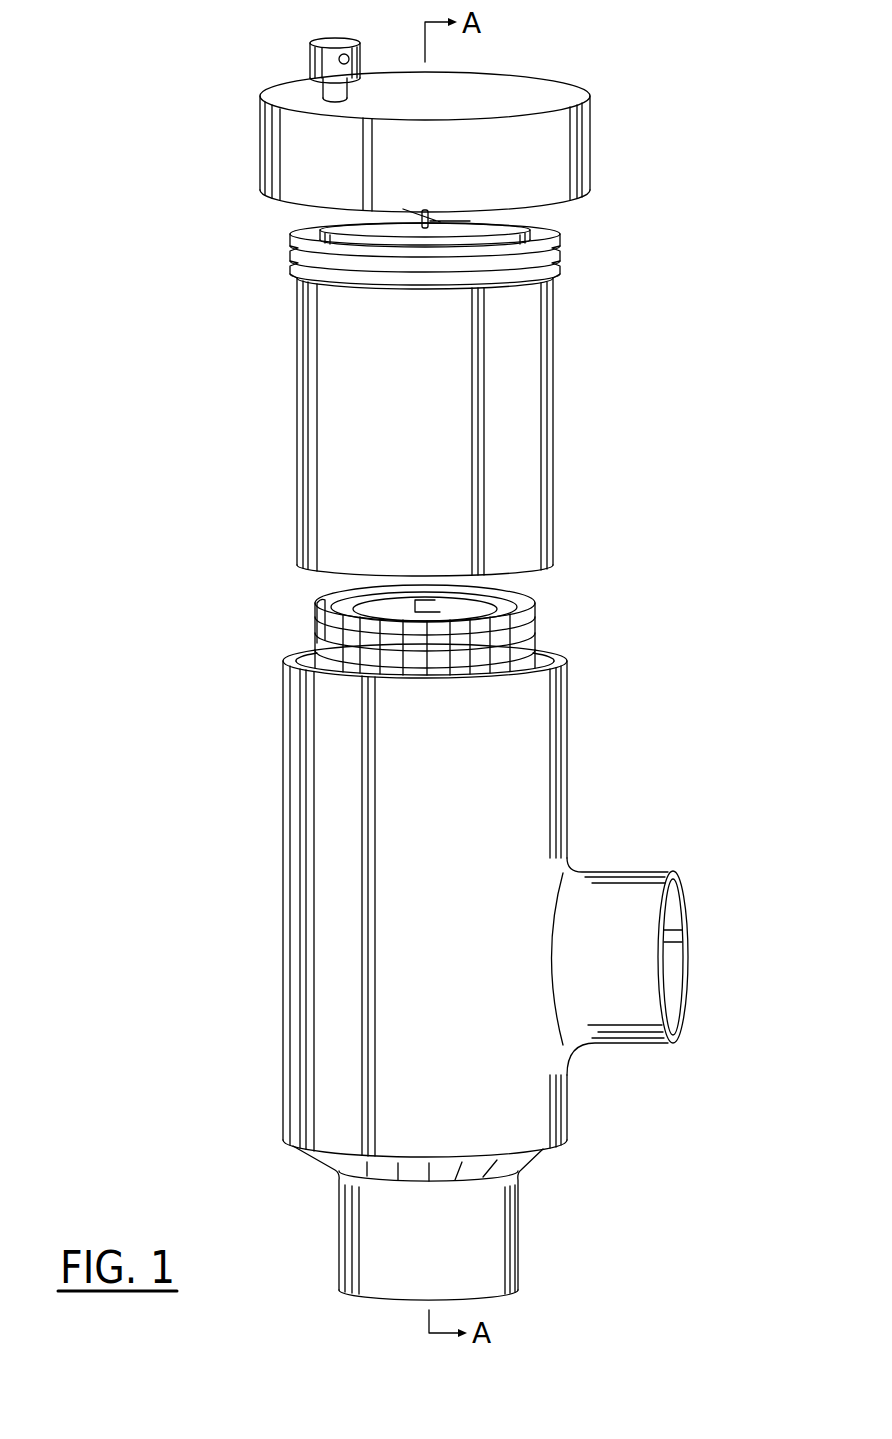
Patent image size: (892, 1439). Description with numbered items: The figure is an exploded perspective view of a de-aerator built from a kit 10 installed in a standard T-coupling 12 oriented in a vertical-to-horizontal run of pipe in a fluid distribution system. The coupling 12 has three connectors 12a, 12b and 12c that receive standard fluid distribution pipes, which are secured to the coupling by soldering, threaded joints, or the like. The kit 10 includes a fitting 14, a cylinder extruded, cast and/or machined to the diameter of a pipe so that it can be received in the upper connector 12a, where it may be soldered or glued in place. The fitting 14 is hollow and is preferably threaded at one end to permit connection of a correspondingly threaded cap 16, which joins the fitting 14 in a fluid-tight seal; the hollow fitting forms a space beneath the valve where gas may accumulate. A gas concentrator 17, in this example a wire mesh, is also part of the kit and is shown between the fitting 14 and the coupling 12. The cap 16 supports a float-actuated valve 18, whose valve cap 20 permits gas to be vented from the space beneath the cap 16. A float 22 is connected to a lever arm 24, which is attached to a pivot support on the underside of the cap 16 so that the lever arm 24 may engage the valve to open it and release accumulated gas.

The kit 10 is at (648, 100).
The T-coupling 12 is at (577, 777).
The connector 12a is at (557, 655).
The connector 12b is at (688, 897).
The connector 12c is at (497, 1293).
The fitting 14 is at (288, 390).
The cap 16 is at (250, 150).
The gas concentrator 17 is at (537, 601).
The valve 18 is at (313, 83).
The valve cap 20 is at (333, 42).
The float 22 is at (487, 223).
The lever arm 24 is at (397, 212).